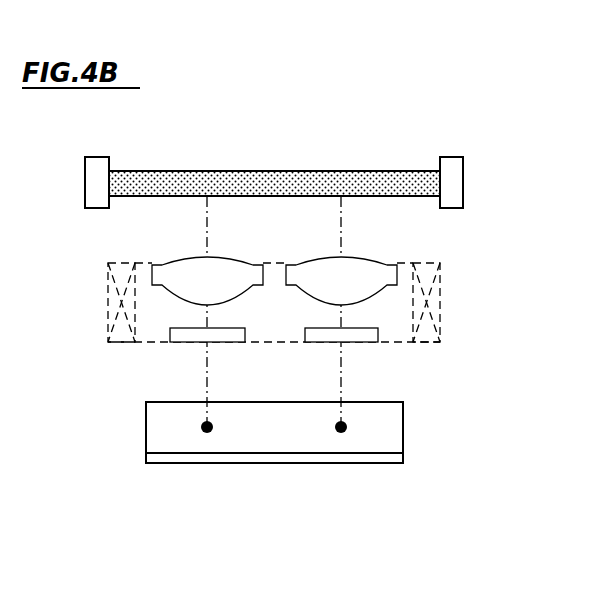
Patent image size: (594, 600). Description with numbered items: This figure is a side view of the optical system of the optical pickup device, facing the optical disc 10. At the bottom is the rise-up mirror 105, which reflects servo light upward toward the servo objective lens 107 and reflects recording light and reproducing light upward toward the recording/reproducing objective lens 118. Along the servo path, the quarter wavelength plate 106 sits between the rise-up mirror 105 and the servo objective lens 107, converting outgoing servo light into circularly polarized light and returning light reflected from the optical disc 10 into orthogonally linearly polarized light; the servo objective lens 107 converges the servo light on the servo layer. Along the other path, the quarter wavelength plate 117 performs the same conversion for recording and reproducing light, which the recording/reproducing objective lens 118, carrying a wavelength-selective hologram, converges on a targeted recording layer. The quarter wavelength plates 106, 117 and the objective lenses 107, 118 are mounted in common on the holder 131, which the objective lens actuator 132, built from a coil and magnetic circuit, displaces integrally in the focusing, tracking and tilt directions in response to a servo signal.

The optical disc 10 is at (353, 158).
The rise-up mirror 105 is at (380, 457).
The quarter wavelength plate 106 is at (187, 342).
The servo objective lens 107 is at (182, 265).
The quarter wavelength plate 117 is at (365, 342).
The recording/reproducing objective lens 118 is at (365, 269).
The holder 131 is at (440, 277).
The objective lens actuator 132 is at (108, 307).